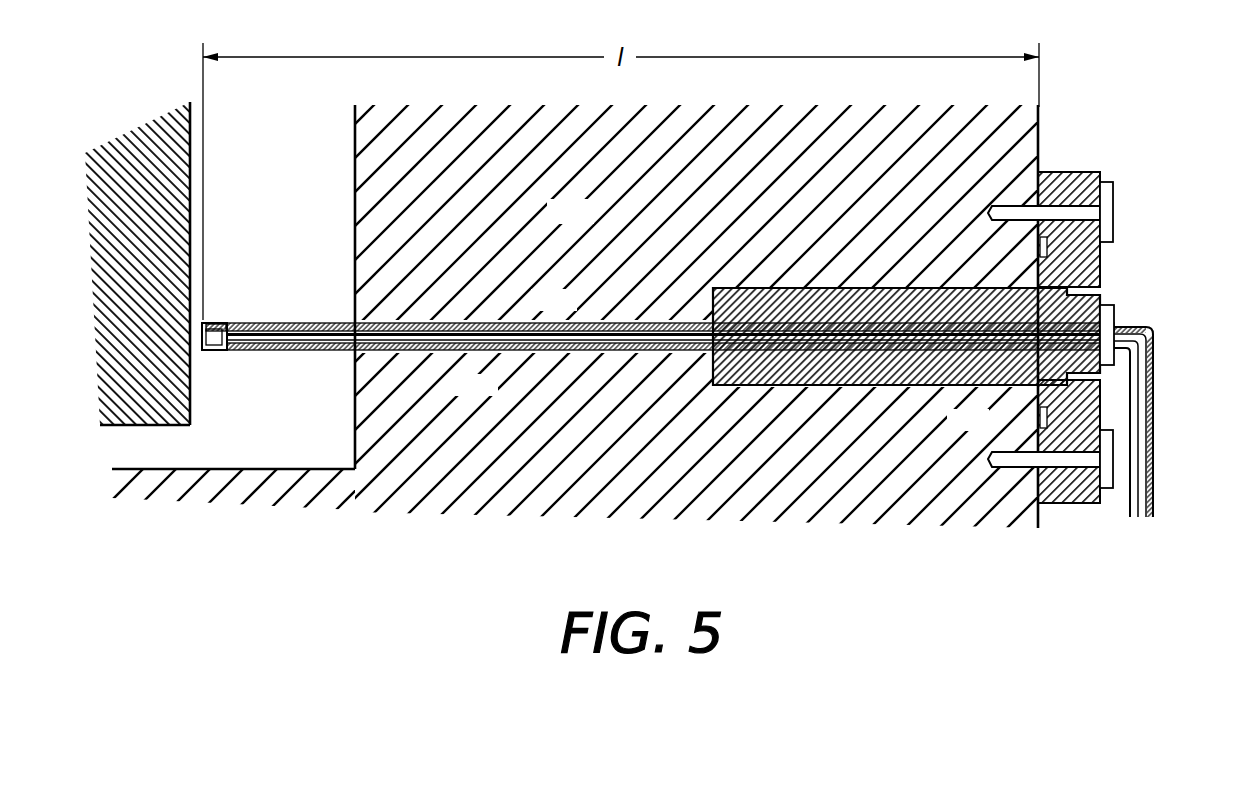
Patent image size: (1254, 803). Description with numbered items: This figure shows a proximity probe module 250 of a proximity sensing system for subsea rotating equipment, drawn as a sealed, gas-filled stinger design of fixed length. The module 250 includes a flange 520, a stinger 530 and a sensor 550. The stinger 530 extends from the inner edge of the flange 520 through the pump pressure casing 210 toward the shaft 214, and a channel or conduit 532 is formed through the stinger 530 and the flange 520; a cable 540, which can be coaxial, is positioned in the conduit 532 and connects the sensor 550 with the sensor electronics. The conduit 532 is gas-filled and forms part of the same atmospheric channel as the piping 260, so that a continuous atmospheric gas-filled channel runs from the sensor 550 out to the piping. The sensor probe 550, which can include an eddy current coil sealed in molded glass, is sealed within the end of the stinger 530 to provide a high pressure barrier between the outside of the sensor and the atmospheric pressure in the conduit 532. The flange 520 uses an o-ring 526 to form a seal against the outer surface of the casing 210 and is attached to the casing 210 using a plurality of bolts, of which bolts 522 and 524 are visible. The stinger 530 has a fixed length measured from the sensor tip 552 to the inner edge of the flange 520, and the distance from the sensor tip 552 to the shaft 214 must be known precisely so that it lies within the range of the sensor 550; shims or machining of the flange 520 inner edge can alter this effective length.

The pump pressure casing 210 is at (591, 222).
The shaft 214 is at (163, 186).
The proximity probe module 250 is at (1077, 301).
The flange 520 is at (1072, 173).
The bolt 522 is at (1107, 221).
The bolt 524 is at (1010, 458).
The o-ring 526 is at (1040, 419).
The stinger 530 is at (617, 323).
The conduit 532 is at (540, 341).
The cable 540 is at (1116, 312).
The sensor 550 is at (229, 350).
The sensor tip 552 is at (204, 322).
The piping 260 is at (1153, 413).